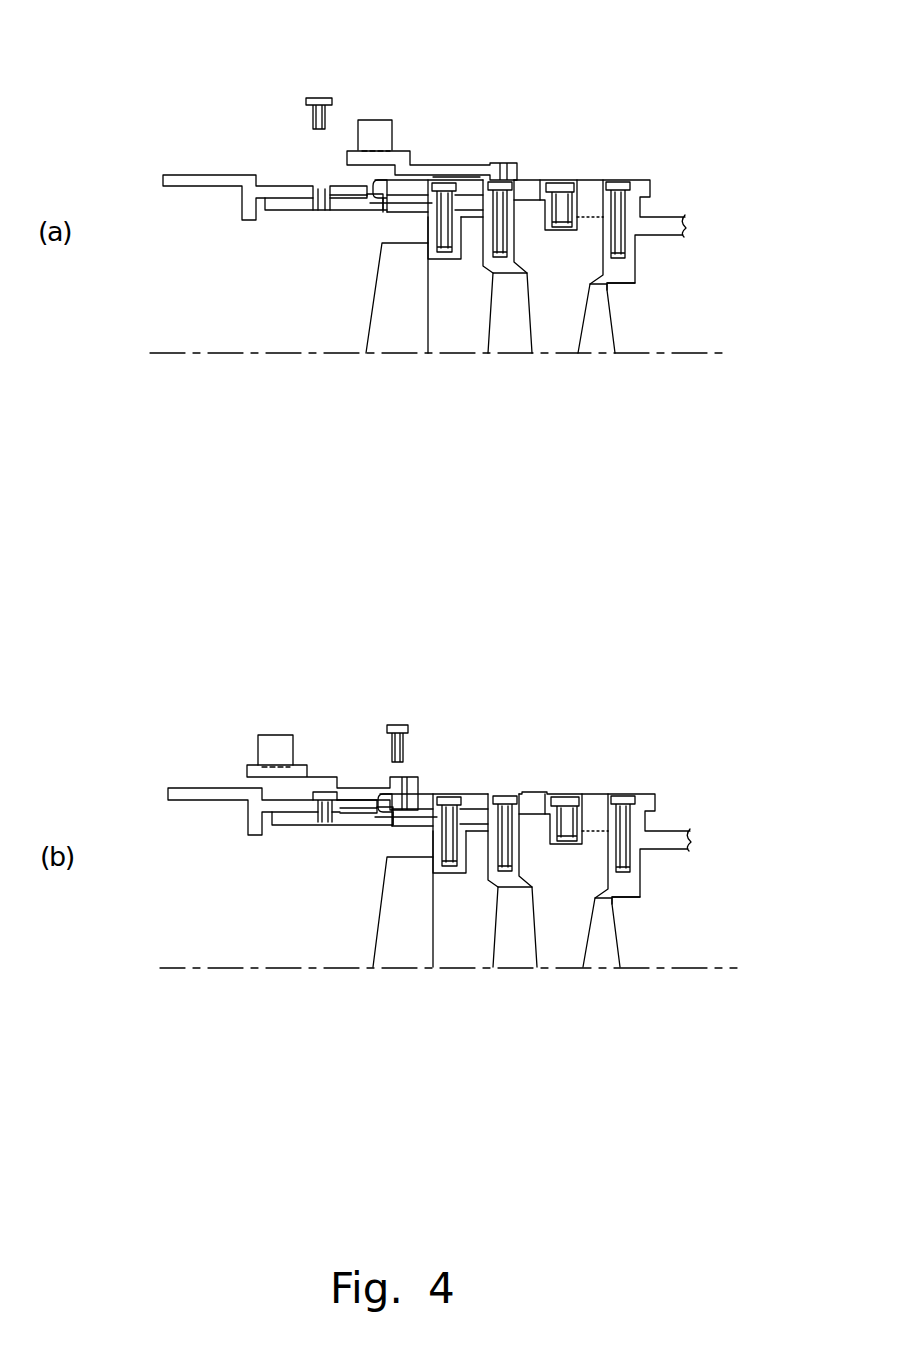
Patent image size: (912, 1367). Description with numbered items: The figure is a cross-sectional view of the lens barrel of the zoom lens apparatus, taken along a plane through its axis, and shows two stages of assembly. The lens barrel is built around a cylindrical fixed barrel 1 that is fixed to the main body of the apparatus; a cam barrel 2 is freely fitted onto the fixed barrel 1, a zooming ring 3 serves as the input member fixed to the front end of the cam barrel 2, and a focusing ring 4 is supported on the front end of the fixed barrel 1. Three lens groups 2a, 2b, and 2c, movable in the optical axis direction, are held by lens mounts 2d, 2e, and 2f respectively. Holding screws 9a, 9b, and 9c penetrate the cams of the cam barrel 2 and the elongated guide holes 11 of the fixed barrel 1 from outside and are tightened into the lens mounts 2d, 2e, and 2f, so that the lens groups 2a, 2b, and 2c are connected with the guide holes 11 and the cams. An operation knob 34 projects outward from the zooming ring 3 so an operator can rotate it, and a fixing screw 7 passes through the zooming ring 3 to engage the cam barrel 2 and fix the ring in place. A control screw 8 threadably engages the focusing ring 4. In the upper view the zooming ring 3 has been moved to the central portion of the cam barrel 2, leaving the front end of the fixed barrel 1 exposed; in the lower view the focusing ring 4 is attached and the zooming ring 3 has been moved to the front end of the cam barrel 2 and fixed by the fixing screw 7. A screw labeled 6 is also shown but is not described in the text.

The fixed barrel 1 is at (352, 207).
The cam barrel 2 is at (537, 797).
The lens group 2a is at (378, 328).
The lens group 2b is at (497, 330).
The lens group 2c is at (595, 345).
The lens mount 2d is at (455, 260).
The lens mount 2e is at (518, 262).
The lens mount 2f is at (628, 275).
The zooming ring 3 is at (471, 165).
The focusing ring 4 is at (198, 177).
The bolt 6 is at (566, 184).
The fixing screw 7 is at (403, 725).
The control screw 8 is at (322, 97).
The holding screw 9a is at (445, 184).
The holding screw 9b is at (500, 184).
The holding screw 9c is at (622, 184).
The guide hole 11 is at (403, 207).
The operation knob 34 is at (378, 128).